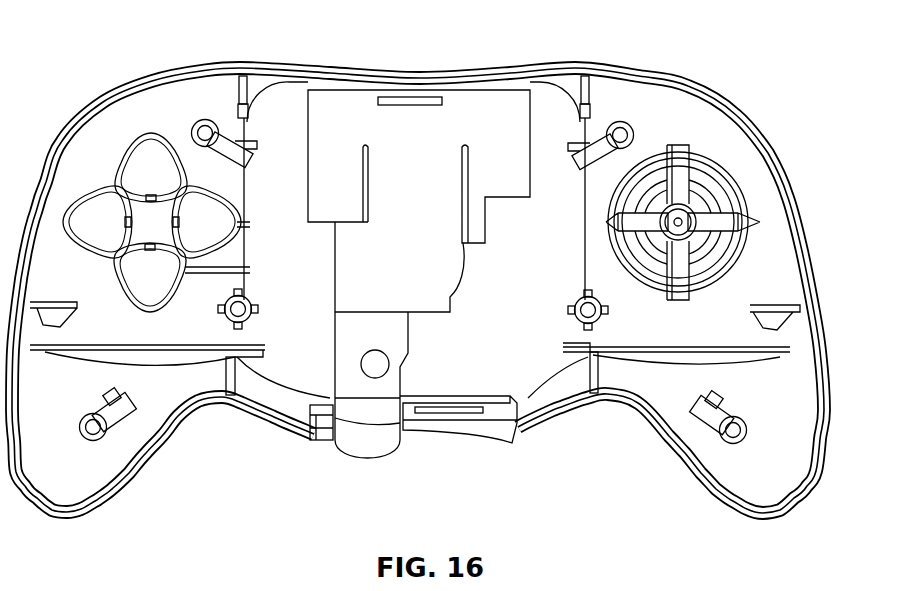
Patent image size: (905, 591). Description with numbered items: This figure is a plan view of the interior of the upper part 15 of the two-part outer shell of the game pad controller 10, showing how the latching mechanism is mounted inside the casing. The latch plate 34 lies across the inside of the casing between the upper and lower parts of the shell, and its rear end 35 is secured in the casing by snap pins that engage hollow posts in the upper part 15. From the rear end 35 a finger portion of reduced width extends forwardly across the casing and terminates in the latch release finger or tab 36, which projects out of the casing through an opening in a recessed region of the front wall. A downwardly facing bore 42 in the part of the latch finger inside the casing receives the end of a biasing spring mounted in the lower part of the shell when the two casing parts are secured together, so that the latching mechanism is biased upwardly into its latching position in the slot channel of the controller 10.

The game pad controller 10 is at (443, 290).
The upper part of the shell 15 is at (808, 327).
The latch plate 34 is at (412, 165).
The rear end of the latch plate 35 is at (350, 103).
The latch release finger or tab 36 is at (362, 446).
The downwardly facing bore 42 is at (375, 378).